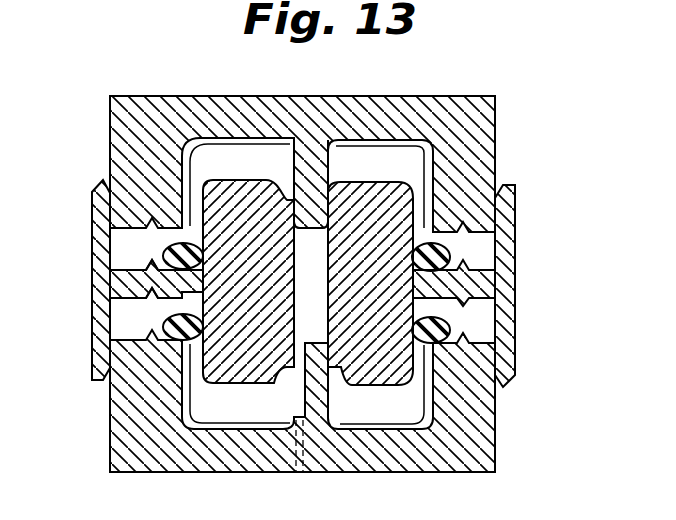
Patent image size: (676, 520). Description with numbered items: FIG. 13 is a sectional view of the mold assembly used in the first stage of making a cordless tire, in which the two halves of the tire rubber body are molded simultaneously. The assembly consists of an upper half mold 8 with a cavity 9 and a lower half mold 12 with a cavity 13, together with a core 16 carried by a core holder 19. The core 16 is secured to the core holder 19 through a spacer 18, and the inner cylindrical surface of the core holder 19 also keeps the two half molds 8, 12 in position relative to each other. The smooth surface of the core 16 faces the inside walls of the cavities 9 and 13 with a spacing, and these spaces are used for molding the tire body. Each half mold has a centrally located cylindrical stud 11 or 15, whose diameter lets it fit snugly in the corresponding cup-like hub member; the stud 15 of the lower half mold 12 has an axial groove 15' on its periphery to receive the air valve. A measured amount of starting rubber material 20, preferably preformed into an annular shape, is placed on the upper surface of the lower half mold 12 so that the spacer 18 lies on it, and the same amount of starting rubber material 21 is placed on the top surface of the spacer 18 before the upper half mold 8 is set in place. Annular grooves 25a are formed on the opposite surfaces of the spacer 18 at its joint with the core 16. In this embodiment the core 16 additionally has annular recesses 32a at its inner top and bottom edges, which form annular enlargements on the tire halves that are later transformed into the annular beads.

The upper half mold 8 is at (192, 108).
The cavity 9 is at (233, 143).
The cylindrical stud 11 is at (310, 192).
The lower half mold 12 is at (110, 450).
The cavity 13 is at (233, 425).
The cylindrical stud 15 is at (376, 427).
The axial groove 15' is at (277, 453).
The core 16 is at (262, 190).
The spacer 18 is at (100, 318).
The core holder 19 is at (100, 244).
The starting rubber material 20 is at (452, 323).
The starting rubber material 21 is at (450, 251).
The annular grooves 25a is at (200, 294).
The annular recesses 32a is at (340, 190).